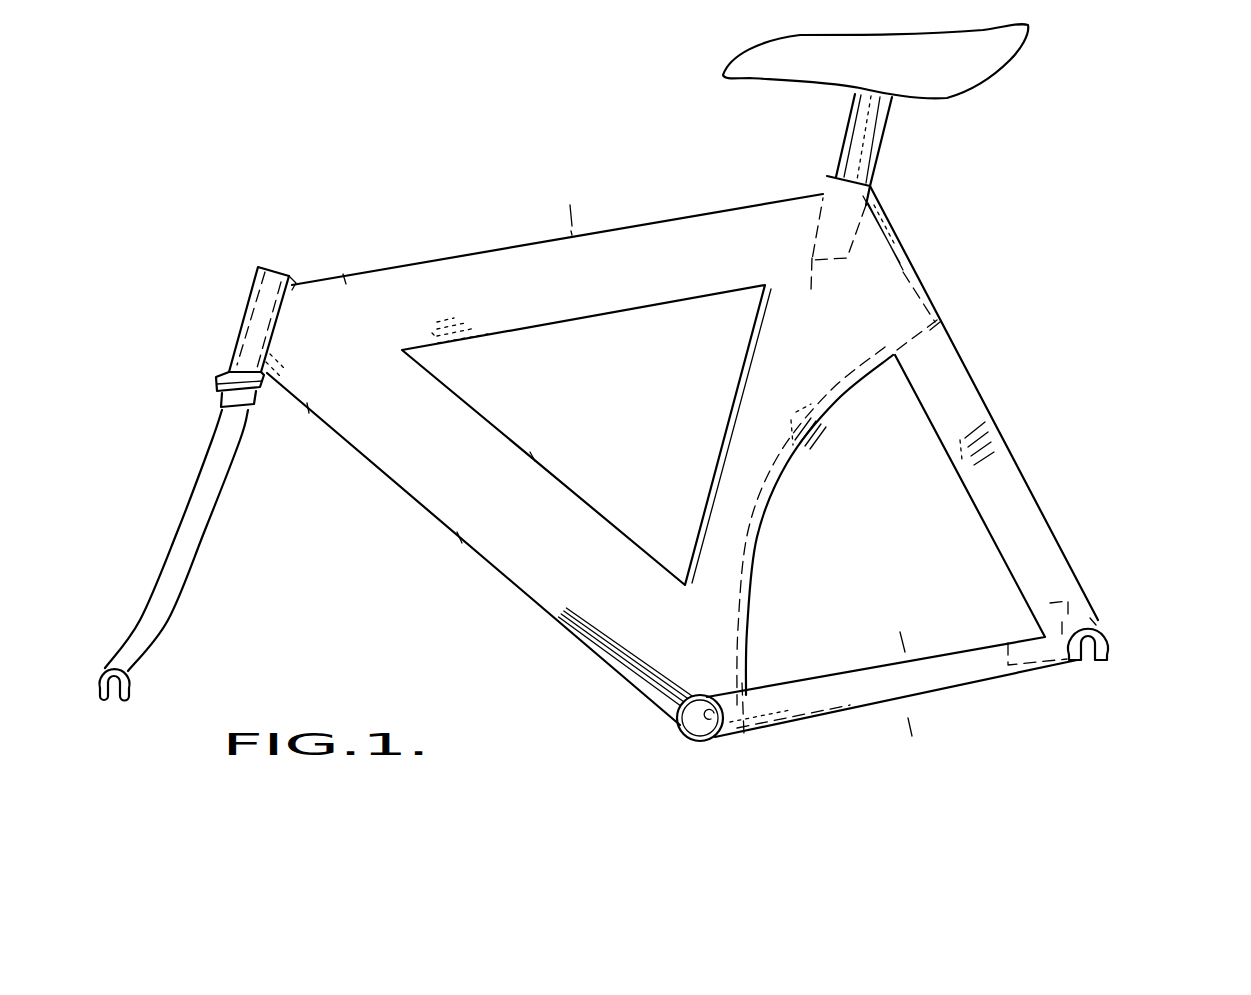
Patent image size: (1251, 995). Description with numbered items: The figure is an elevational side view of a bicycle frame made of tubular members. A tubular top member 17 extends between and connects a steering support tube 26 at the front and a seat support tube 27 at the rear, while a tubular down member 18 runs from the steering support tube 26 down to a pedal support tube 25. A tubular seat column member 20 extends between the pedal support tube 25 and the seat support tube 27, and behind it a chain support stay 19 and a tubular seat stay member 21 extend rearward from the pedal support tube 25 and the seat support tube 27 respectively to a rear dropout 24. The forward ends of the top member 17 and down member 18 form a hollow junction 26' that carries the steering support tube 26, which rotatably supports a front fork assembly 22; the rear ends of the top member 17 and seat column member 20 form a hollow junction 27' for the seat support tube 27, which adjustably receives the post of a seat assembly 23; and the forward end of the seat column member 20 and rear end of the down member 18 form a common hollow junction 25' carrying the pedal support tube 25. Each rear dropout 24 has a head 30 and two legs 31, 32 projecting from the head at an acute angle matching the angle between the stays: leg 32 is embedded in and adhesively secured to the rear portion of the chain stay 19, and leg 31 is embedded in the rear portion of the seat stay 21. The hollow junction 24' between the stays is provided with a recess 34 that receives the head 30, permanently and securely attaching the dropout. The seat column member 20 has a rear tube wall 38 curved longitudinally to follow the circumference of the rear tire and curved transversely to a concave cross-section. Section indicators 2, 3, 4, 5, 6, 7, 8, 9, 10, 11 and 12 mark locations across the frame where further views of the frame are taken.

The section line 2- 2 is at (790, 204).
The section line 3- 3 is at (962, 157).
The section line 4- 4 is at (1130, 598).
The section line 5- 5 is at (548, 430).
The section line 6- 6 is at (570, 203).
The section line 7- 7 is at (715, 475).
The section line 8- 8 is at (350, 247).
The section line 9- 9 is at (677, 583).
The section line 10- 10 is at (903, 657).
The section line 11- 11 is at (248, 308).
The section line 12- 12 is at (1055, 440).
The tubular top member 17 is at (523, 268).
The tubular down member 18 is at (418, 495).
The chain support stay 19 is at (935, 695).
The tubular seat column member 20 is at (752, 552).
The tubular seat stay member 21 is at (963, 382).
The front fork assembly 22 is at (228, 481).
The seat assembly 23 is at (897, 98).
The rear dropout 24 is at (1102, 674).
The hollow junction 24' is at (951, 590).
The pedal support tube 25 is at (755, 728).
The common hollow junction 25' is at (626, 714).
The steering support tube 26 is at (261, 288).
The hollow junction 26' is at (320, 247).
The seat support tube 27 is at (827, 244).
The hollow junction 27' is at (924, 243).
The head 30 is at (1098, 650).
The leg 31 is at (1058, 603).
The leg 32 is at (1045, 663).
The recess 34 is at (1093, 616).
The rear tube wall 38 is at (745, 583).